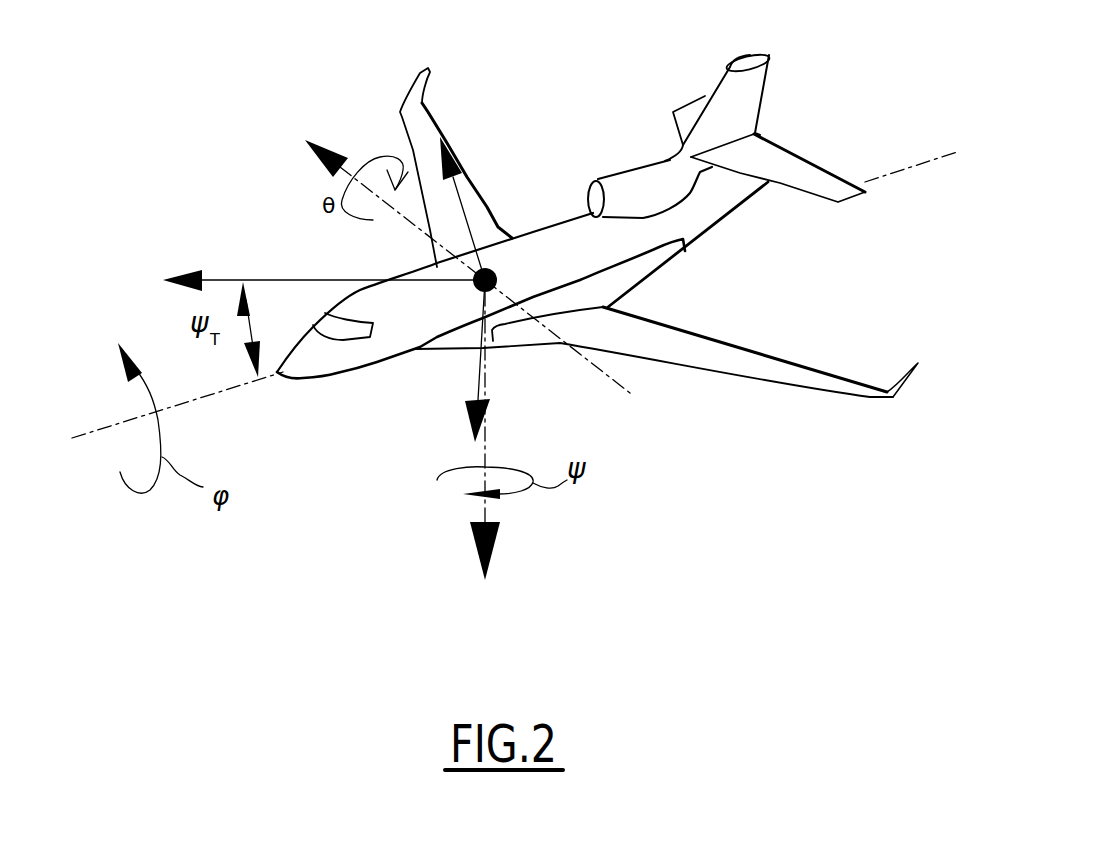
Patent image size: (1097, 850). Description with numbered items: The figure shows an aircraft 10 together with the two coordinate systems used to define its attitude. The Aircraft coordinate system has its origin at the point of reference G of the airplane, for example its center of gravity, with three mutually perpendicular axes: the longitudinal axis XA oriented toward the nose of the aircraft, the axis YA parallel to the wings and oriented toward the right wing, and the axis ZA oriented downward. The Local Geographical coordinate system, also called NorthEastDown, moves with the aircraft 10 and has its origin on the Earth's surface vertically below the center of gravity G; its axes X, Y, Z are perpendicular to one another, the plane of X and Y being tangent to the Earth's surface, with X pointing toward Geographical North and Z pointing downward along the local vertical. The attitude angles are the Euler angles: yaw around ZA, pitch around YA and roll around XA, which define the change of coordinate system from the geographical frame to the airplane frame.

The aircraft 10 is at (558, 250).
The center of gravity G is at (497, 277).
The X axis of Local Geographical coordinate system X is at (274, 279).
The Y axis of Local Geographical coordinate system Y is at (479, 194).
The Z axis of Local Geographical coordinate system Z is at (463, 361).
The longitudinal axis XA is at (500, 319).
The lateral axis YA is at (452, 249).
The vertical axis ZA is at (486, 461).